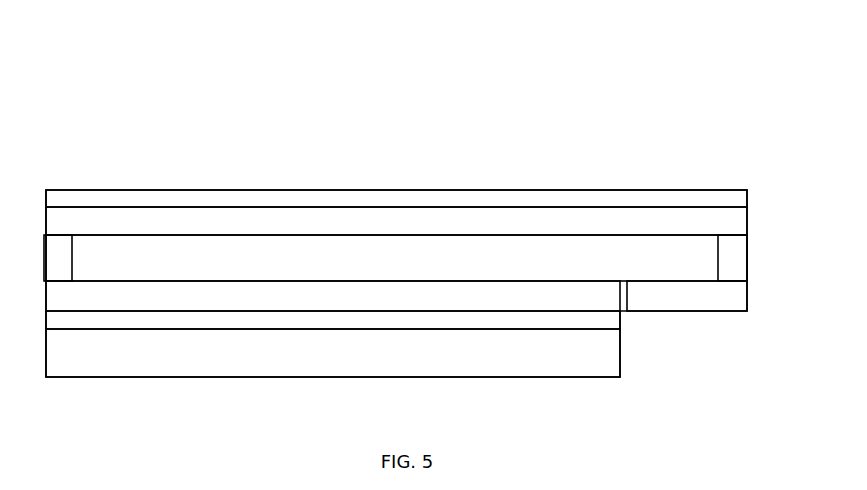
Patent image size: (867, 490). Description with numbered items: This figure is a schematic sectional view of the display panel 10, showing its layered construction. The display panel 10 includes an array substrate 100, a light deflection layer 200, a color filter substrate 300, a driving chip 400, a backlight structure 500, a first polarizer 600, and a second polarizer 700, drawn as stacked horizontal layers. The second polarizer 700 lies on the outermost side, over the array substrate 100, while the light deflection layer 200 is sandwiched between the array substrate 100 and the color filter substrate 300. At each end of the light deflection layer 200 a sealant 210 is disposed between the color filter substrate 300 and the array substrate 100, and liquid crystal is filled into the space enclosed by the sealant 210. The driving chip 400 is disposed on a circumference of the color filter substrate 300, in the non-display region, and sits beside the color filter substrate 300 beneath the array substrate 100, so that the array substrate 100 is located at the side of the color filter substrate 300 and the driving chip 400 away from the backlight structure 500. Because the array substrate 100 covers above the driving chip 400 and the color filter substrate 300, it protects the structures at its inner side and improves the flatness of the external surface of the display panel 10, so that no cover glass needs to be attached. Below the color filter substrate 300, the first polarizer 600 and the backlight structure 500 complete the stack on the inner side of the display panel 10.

The display panel 10 is at (126, 131).
The array substrate 100 is at (282, 225).
The light deflection layer 200 is at (397, 255).
The sealant 210 is at (58, 260).
The color filter substrate 300 is at (488, 293).
The driving chip 400 is at (660, 297).
The backlight structure 500 is at (440, 355).
The first polarizer 600 is at (280, 318).
The second polarizer 700 is at (160, 200).